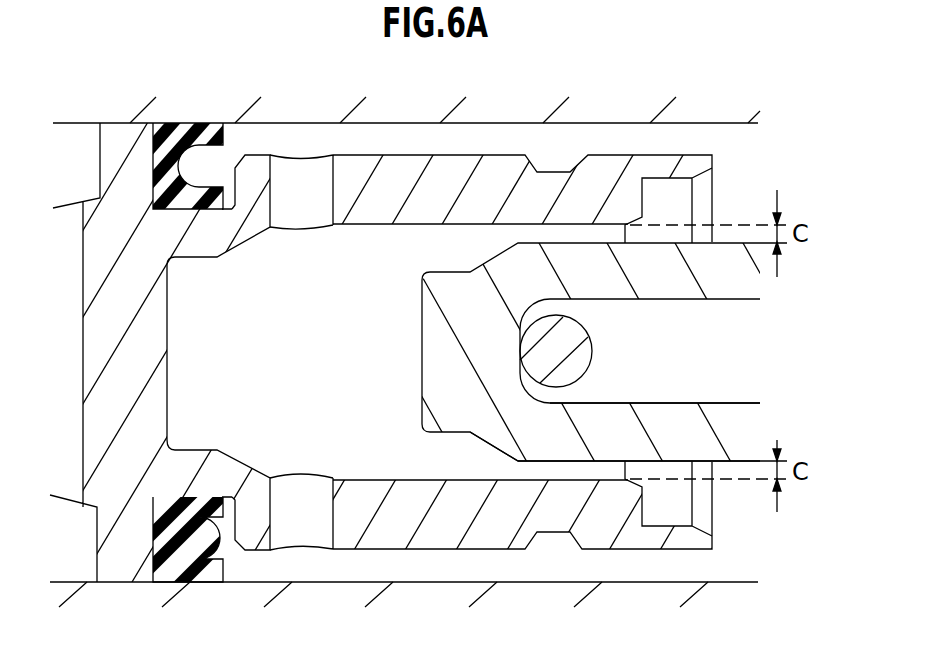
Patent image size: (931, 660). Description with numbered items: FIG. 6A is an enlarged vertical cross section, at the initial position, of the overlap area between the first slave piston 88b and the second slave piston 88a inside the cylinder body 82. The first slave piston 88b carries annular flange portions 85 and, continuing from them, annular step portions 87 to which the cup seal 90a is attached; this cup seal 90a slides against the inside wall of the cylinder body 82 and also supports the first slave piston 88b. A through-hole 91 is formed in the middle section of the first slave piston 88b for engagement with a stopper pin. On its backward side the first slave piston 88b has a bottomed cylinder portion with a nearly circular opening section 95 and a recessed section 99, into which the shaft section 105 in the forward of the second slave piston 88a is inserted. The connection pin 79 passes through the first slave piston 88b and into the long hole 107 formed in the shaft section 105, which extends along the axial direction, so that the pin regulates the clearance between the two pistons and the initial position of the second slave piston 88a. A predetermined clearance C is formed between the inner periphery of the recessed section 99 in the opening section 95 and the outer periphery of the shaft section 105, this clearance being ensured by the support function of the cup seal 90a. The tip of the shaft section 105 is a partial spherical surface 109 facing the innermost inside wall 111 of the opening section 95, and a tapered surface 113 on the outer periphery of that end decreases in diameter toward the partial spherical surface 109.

The connection pin 79 is at (582, 352).
The cylinder body 82 is at (662, 592).
The annular flange portions 85 is at (124, 556).
The annular step portions 87 is at (186, 496).
The second slave piston 88a is at (572, 461).
The first slave piston 88b is at (399, 155).
The cup seal 90a is at (178, 563).
The through-hole 91 is at (88, 362).
The opening section 95 is at (716, 181).
The recessed section 99 is at (453, 224).
The shaft section 105 is at (678, 433).
The long hole 107 is at (628, 298).
The partial spherical surface 109 is at (422, 328).
The innermost inside wall 111 is at (167, 322).
The tapered surface 113 is at (487, 445).